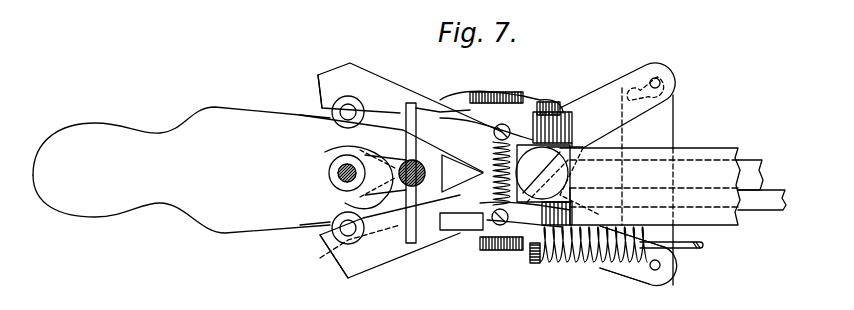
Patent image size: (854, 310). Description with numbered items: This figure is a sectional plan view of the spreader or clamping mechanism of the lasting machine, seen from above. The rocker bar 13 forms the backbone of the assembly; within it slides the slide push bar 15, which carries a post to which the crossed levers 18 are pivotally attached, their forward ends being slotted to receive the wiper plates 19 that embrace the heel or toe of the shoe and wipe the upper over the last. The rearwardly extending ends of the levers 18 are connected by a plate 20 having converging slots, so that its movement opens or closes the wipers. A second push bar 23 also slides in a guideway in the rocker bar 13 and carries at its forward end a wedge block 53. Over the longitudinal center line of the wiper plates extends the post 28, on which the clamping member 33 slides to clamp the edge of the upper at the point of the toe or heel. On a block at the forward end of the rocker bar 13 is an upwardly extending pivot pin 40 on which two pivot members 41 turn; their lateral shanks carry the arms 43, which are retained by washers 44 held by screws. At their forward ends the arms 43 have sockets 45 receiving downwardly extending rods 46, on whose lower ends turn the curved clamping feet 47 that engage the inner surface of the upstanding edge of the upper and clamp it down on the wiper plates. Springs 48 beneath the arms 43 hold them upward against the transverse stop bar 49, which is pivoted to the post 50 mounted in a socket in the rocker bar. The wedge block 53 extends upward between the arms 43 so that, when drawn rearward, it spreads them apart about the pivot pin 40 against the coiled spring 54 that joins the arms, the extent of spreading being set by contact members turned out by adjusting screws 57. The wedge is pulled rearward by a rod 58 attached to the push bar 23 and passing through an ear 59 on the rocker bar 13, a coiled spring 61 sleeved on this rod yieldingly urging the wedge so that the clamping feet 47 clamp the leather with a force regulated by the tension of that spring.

The rocker bar 13 is at (720, 147).
The slide push bar 15 is at (748, 160).
The crossed levers 18 is at (360, 70).
The wiper plates 19 is at (322, 108).
The plate 20 is at (674, 124).
The push bar 23 is at (775, 211).
The post 28 is at (338, 173).
The clamping member 33 is at (355, 153).
The pivot pin 40 is at (572, 172).
The pivot members 41 is at (570, 144).
The arms 43 is at (573, 125).
The washers 44 is at (555, 108).
The sockets 45 is at (338, 70).
The rods 46 is at (348, 104).
The clamping feet 47 is at (312, 117).
The springs 48 is at (498, 92).
The stop bar 49 is at (410, 103).
The post 50 is at (430, 110).
The wedge block 53 is at (460, 230).
The coiled spring 54 is at (500, 232).
The adjusting screws 57 is at (432, 108).
The rod 58 is at (703, 246).
The ear 59 is at (535, 265).
The coiled spring 61 is at (612, 268).